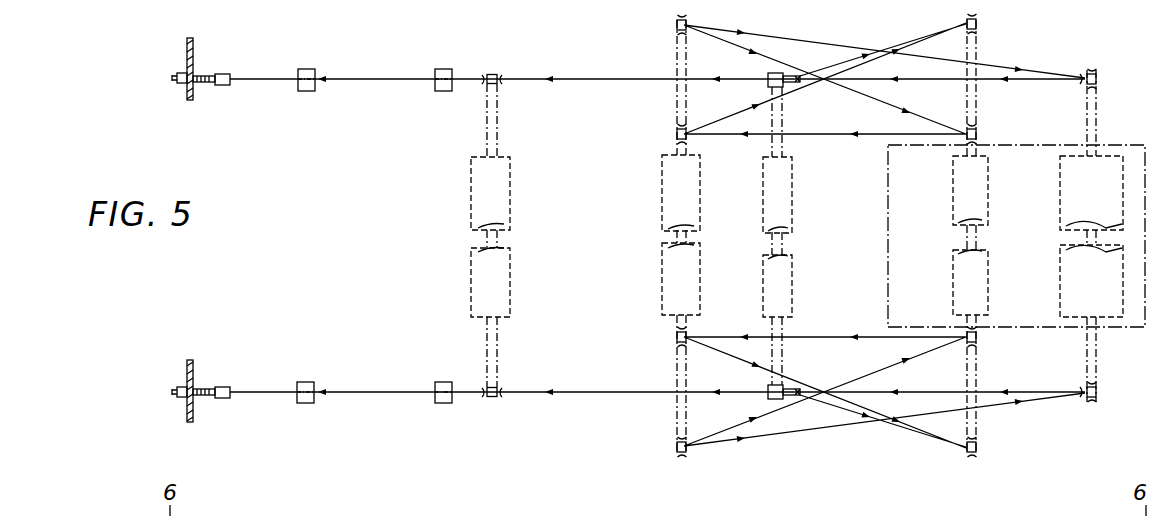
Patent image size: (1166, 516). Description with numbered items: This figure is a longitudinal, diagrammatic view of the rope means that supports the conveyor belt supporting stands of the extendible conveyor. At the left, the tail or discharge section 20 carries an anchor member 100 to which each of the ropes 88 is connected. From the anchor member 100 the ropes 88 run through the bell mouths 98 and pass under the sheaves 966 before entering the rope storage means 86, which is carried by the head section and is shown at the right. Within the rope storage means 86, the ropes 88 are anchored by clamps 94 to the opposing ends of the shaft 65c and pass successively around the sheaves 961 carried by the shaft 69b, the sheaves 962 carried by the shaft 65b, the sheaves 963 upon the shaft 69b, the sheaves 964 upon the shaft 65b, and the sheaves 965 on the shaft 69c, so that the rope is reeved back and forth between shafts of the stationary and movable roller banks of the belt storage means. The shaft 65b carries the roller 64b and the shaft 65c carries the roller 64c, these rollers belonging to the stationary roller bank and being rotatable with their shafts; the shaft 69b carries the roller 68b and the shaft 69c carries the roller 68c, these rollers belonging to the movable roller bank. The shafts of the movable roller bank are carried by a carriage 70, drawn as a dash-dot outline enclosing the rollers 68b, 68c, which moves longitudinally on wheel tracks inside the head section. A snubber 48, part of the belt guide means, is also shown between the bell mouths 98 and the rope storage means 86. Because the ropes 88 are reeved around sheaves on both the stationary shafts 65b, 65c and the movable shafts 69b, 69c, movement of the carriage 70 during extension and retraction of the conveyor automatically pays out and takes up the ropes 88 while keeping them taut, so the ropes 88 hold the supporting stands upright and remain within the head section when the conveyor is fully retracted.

The tail or discharge section 20 is at (187, 52).
The anchor member 100 is at (222, 86).
The bell mouths 98 is at (311, 92).
The ropes 88 is at (350, 78).
The clamps 94 is at (799, 76).
The rope storage means 86 is at (834, 38).
The shaft 65b is at (676, 66).
The shaft 65c is at (783, 118).
The shaft 69b is at (978, 57).
The shaft 69c is at (1097, 72).
The sheaves 961 is at (978, 25).
The sheaves 962 is at (671, 337).
The sheaves 963 is at (976, 131).
The sheaves 964 is at (695, 468).
The sheaves 965 is at (1101, 80).
The sheaves 966 is at (497, 76).
The snubber 48 is at (509, 170).
The roller 64b is at (660, 192).
The roller 64c is at (794, 192).
The carriage 70 is at (886, 287).
The roller 68b is at (951, 192).
The roller 68c is at (1058, 192).